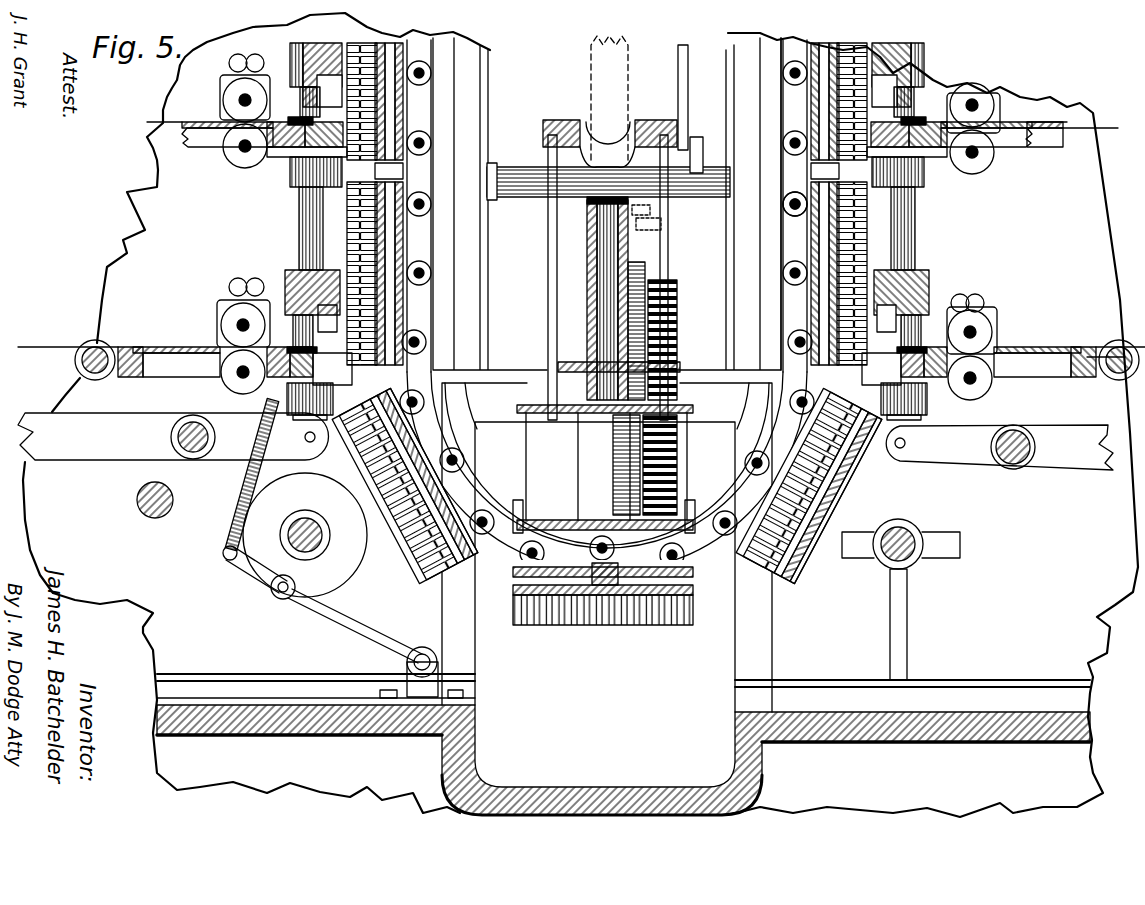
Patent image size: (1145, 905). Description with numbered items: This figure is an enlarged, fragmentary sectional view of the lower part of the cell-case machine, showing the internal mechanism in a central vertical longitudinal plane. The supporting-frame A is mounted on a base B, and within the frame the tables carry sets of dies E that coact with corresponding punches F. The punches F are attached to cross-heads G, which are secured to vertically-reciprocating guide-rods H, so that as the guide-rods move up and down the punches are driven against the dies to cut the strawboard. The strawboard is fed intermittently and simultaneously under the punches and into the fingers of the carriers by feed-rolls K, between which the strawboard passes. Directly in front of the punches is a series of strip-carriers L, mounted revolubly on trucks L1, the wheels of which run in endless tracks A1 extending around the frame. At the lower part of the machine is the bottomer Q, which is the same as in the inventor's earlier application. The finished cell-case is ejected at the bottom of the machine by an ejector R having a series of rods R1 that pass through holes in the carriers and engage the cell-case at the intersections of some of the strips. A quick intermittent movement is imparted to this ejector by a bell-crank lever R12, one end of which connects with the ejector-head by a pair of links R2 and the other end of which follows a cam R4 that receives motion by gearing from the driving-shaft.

The supporting-frame A is at (551, 413).
The endless tracks A1 is at (790, 147).
The base B is at (315, 759).
The dies E is at (300, 118).
The punches F is at (920, 312).
The cross-heads G is at (292, 50).
The guide-rods H is at (300, 230).
The feed-rolls K is at (235, 100).
The strip-carriers L is at (385, 170).
The trucks L1 is at (786, 210).
The bottomer Q is at (345, 462).
The ejector R is at (517, 408).
The rods R1 is at (526, 459).
The links R2 is at (548, 282).
The cam R4 is at (645, 258).
The bell-crank lever R12 is at (645, 126).